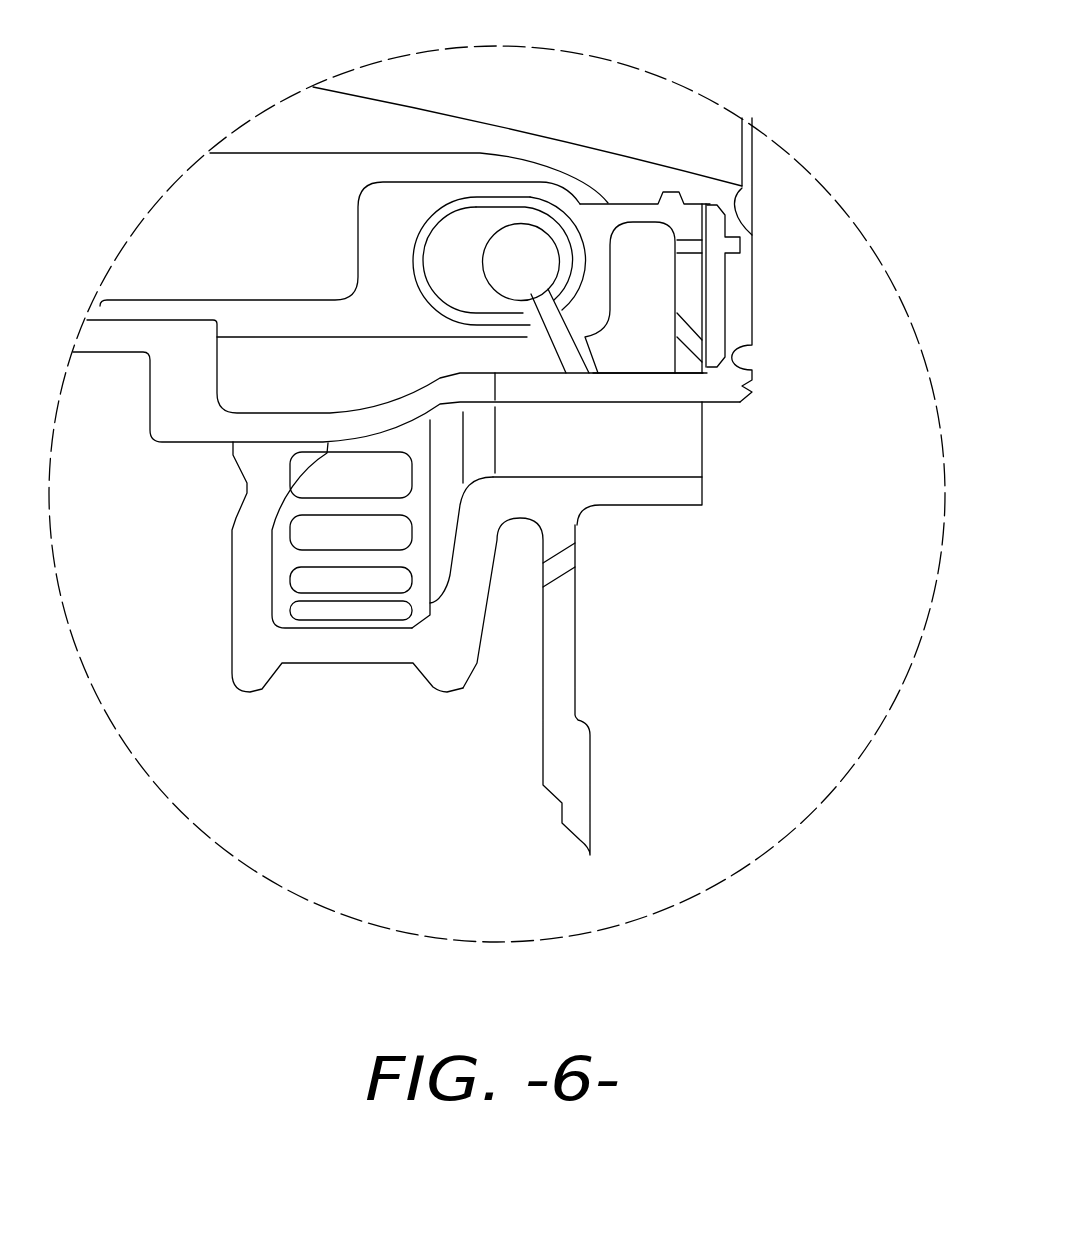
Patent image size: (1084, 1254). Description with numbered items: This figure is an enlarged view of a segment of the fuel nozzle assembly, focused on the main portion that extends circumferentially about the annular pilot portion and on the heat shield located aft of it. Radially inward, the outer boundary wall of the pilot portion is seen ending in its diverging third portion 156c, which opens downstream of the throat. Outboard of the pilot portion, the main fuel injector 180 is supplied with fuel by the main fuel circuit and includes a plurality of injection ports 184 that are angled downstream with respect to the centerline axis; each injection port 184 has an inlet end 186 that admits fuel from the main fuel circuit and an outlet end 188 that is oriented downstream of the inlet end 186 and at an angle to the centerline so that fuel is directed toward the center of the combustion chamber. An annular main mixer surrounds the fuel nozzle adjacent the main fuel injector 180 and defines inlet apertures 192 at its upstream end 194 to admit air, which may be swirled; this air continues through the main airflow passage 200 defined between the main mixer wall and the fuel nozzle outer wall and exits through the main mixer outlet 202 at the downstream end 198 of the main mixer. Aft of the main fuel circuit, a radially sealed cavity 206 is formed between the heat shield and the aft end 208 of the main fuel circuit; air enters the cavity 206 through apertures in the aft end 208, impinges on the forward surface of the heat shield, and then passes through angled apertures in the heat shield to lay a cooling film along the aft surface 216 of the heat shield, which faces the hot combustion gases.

The diverging third portion 156c is at (448, 108).
The main fuel injector 180 is at (260, 350).
The injection ports 184 is at (548, 347).
The inlet end 186 is at (532, 280).
The outlet end 188 is at (564, 357).
The inlet apertures 192 is at (332, 577).
The upstream end 194 is at (281, 705).
The downstream end 198 is at (696, 530).
The main airflow passage 200 is at (588, 455).
The main mixer outlet 202 is at (720, 437).
The radially sealed cavity 206 is at (710, 282).
The aft end 208 is at (695, 200).
The aft surface 216 is at (752, 280).